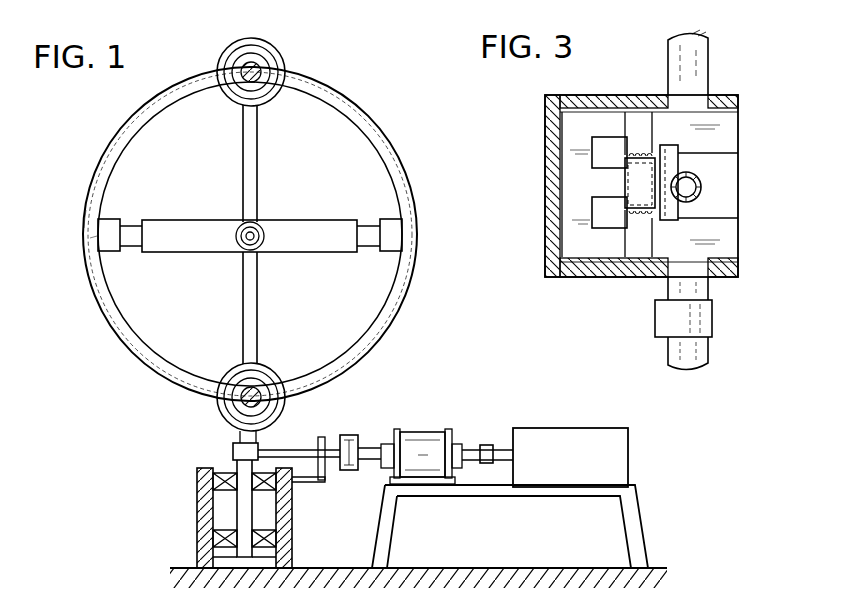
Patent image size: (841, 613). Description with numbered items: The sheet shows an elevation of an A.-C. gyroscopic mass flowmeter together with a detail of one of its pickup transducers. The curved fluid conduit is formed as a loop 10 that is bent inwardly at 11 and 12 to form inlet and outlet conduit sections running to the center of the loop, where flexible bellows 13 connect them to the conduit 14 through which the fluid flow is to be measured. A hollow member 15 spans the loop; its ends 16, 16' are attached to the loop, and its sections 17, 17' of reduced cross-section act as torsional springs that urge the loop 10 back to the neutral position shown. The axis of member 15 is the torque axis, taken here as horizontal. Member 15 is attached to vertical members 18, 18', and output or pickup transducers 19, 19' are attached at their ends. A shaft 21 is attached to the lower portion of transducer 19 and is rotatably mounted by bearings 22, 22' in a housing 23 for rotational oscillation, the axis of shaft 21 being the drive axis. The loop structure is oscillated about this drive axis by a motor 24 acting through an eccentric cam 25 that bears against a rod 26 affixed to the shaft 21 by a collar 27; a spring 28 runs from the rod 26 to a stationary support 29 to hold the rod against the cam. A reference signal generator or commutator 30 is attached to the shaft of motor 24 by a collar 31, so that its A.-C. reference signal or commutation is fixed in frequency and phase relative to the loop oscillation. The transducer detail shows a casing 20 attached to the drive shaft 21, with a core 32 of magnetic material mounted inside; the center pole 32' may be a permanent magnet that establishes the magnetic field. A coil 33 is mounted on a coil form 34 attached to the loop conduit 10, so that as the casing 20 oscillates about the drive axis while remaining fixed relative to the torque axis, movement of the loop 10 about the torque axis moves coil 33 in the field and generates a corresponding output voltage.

In FIG. 1, the loop 10 is at (380, 142).
In FIG. 3, the loop 10 is at (701, 187).
In FIG. 1, the inward bend 11 is at (92, 225).
In FIG. 1, the inward bend 12 is at (90, 238).
In FIG. 1, the bellows 13 is at (260, 228).
In FIG. 1, the conduit 14 is at (244, 244).
In FIG. 1, the member 15 is at (190, 234).
In FIG. 1, the end of member 16 is at (119, 217).
In FIG. 1, the end of member 16' is at (383, 223).
In FIG. 1, the section of reduced cross-section 17 is at (148, 215).
In FIG. 1, the section of reduced cross-section 17' is at (352, 217).
In FIG. 1, the vertical member 18 is at (272, 308).
In FIG. 3, the vertical member 18 is at (662, 62).
In FIG. 1, the vertical member 18' is at (280, 163).
In FIG. 1, the pickup transducer 19 is at (259, 381).
In FIG. 1, the pickup transducer 19' is at (275, 69).
In FIG. 3, the casing 20 is at (547, 182).
In FIG. 1, the shaft 21 is at (245, 508).
In FIG. 3, the shaft 21 is at (670, 288).
In FIG. 1, the bearing 22 is at (226, 465).
In FIG. 1, the bearing 22' is at (215, 535).
In FIG. 1, the housing 23 is at (285, 522).
In FIG. 1, the motor 24 is at (420, 434).
In FIG. 1, the eccentric cam 25 is at (350, 440).
In FIG. 1, the rod 26 is at (293, 452).
In FIG. 1, the collar 27 is at (233, 451).
In FIG. 3, the collar 27 is at (712, 318).
In FIG. 1, the spring 28 is at (322, 437).
In FIG. 1, the stationary support 29 is at (327, 472).
In FIG. 1, the reference signal generator or commutator 30 is at (562, 430).
In FIG. 1, the collar 31 is at (488, 445).
In FIG. 1, the core 32 is at (234, 224).
In FIG. 3, the core 32 is at (621, 184).
In FIG. 3, the center pole 32' is at (609, 184).
In FIG. 3, the coil 33 is at (643, 155).
In FIG. 1, the coil form 34 is at (257, 62).
In FIG. 3, the coil form 34 is at (672, 158).